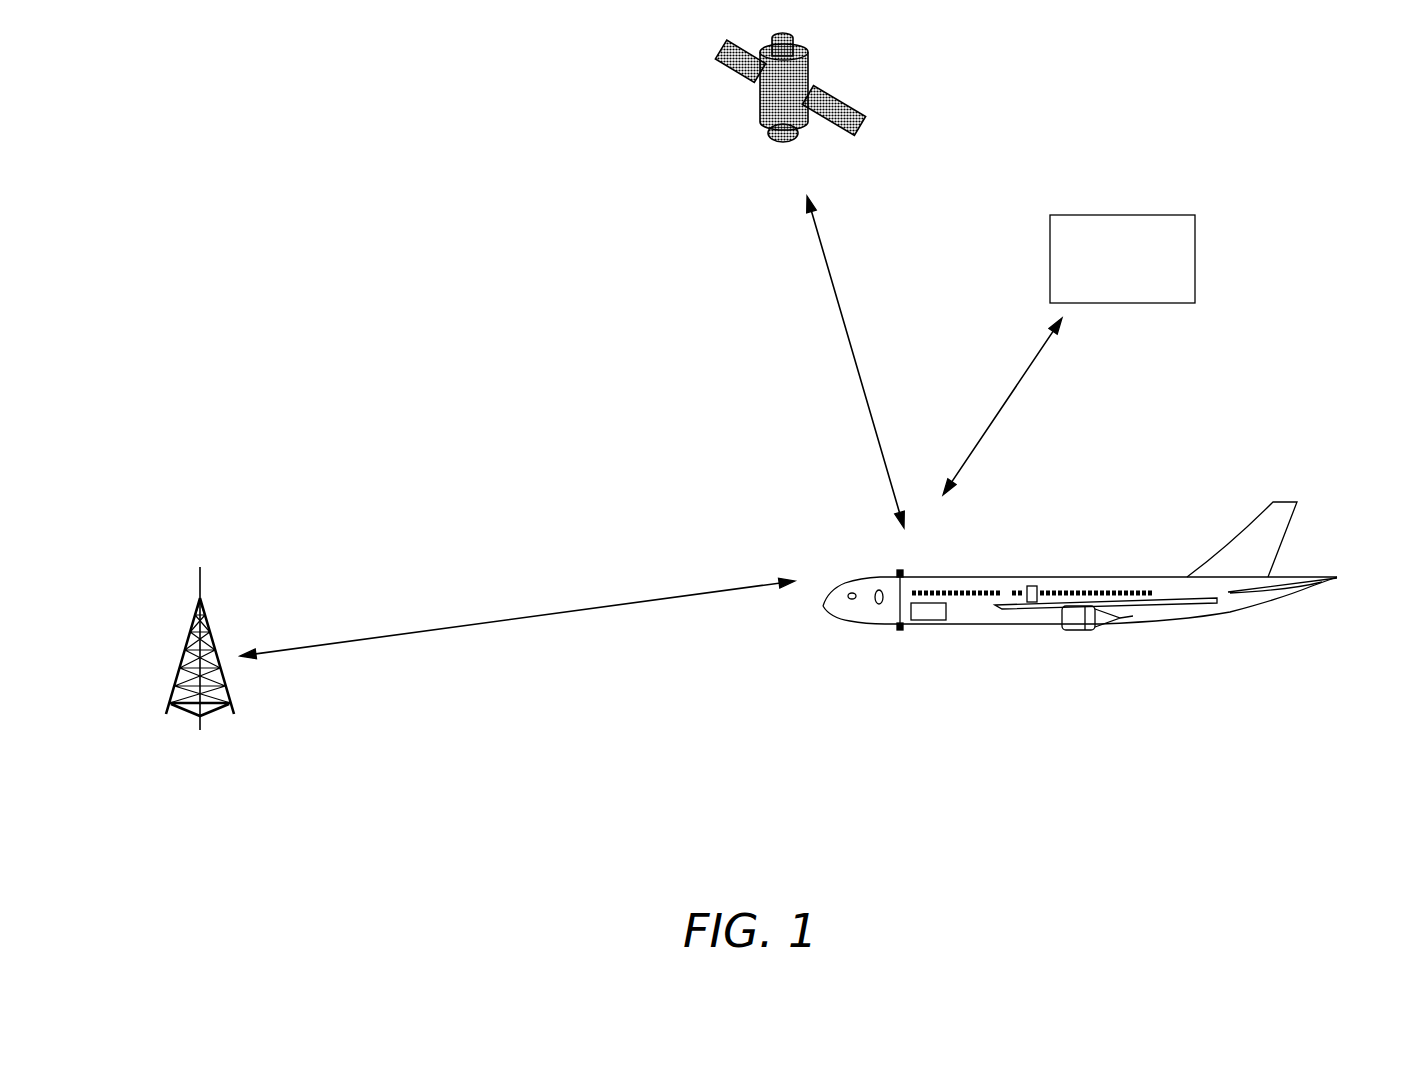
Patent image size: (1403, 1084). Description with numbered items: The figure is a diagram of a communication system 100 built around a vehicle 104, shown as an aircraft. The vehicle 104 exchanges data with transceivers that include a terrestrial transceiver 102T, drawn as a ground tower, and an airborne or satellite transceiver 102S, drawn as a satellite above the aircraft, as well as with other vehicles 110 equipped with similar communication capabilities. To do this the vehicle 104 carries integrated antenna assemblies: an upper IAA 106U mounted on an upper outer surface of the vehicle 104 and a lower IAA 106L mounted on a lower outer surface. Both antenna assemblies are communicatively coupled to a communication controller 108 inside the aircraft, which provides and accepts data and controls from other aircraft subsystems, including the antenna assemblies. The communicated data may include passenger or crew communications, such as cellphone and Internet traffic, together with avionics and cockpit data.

The communication system 100 is at (528, 152).
The satellite transceiver 102S is at (848, 132).
The terrestrial transceiver 102T is at (200, 567).
The vehicle 104 is at (1030, 565).
The upper IAA 106U is at (900, 568).
The lower IAA 106L is at (900, 631).
The communication controller 108 is at (931, 620).
The other vehicles 110 is at (1197, 258).